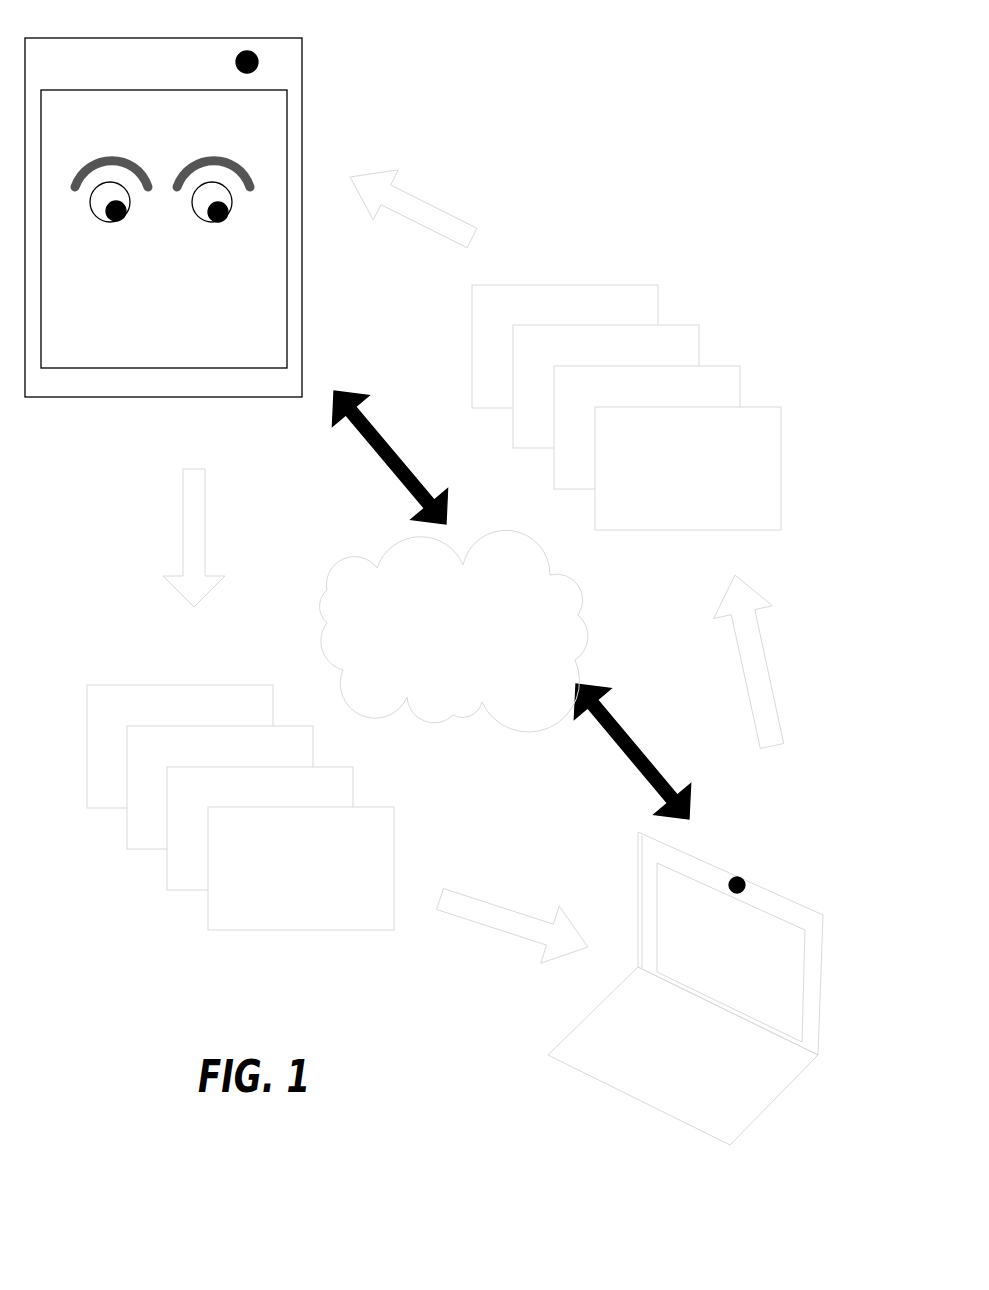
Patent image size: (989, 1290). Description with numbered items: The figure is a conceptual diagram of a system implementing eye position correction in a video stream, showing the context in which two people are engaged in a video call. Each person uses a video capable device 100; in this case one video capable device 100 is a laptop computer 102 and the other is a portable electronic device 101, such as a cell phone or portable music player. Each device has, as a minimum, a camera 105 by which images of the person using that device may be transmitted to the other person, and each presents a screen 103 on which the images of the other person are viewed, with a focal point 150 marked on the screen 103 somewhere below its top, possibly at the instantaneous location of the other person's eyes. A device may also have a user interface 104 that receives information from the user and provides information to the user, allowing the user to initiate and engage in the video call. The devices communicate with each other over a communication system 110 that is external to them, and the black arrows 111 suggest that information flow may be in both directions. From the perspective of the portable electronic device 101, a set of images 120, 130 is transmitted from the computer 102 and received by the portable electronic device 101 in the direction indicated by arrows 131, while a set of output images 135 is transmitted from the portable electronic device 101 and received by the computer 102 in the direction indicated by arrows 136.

The video capable device 100 is at (424, 591).
The portable electronic device 101 is at (302, 95).
The laptop computer 102 is at (637, 1100).
The screen 103 is at (240, 173).
The user interface 104 is at (608, 1053).
The camera 105 is at (255, 50).
The communication system 110 is at (380, 558).
The black arrows 111 is at (382, 430).
The set of images 120 is at (629, 393).
The server application / web pages 130 is at (678, 298).
The arrows 131 is at (445, 212).
The set of output images 135 is at (178, 908).
The arrows 136 is at (182, 498).
The focal point 150 is at (170, 210).